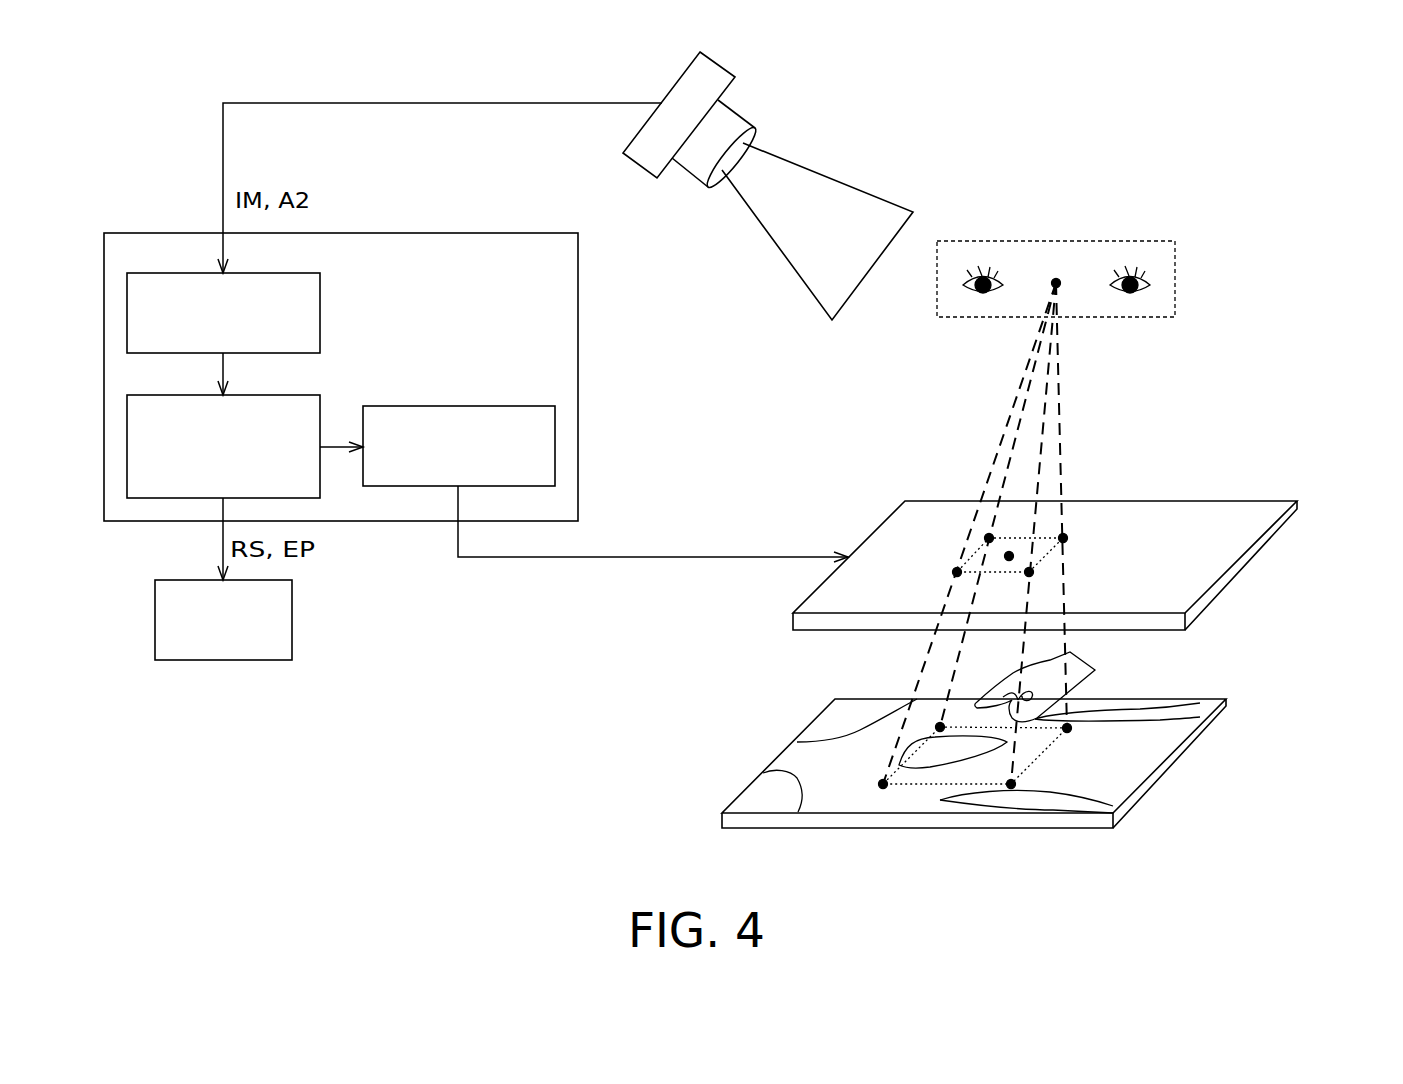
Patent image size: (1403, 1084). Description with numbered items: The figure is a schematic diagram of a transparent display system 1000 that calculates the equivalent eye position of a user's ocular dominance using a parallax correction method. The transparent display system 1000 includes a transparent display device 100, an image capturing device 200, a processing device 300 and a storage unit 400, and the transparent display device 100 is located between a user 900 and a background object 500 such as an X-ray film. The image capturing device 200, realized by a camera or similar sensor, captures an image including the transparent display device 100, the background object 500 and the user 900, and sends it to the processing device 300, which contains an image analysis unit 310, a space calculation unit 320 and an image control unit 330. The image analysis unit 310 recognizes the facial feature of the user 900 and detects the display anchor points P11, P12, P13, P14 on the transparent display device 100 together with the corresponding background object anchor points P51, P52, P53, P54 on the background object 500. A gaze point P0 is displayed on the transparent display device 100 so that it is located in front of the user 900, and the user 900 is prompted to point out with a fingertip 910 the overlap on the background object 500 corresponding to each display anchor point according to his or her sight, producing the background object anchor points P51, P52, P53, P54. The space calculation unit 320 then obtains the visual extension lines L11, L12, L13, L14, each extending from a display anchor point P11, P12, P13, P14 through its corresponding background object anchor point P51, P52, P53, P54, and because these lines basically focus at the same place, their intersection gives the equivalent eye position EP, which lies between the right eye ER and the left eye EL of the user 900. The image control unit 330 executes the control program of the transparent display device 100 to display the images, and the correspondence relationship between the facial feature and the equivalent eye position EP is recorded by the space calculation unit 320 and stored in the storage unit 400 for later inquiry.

The transparent display system 1000 is at (1395, 76).
The image capturing device 200 is at (713, 87).
The processing device 300 is at (565, 269).
The image analysis unit 310 is at (270, 342).
The space calculation unit 320 is at (202, 492).
The image control unit 330 is at (505, 475).
The storage unit 400 is at (287, 649).
The user 900 is at (1177, 275).
The transparent display device 100 is at (1300, 505).
The background object 500 is at (1228, 703).
The fingertip 910 is at (988, 695).
The right eye ER is at (983, 275).
The left eye EL is at (1130, 275).
The equivalent eye position EP is at (1057, 279).
The visual extension line L11 is at (1060, 373).
The visual extension line L12 is at (1043, 437).
The visual extension line L13 is at (1007, 432).
The visual extension line L14 is at (1028, 392).
The gaze point P0 is at (1011, 553).
The display anchor point P11 is at (1066, 538).
The display anchor point P12 is at (1032, 573).
The display anchor point P13 is at (956, 572).
The display anchor point P14 is at (987, 537).
The background object anchor point P51 is at (1067, 728).
The background object anchor point P52 is at (1012, 788).
The background object anchor point P53 is at (883, 788).
The background object anchor point P54 is at (938, 724).